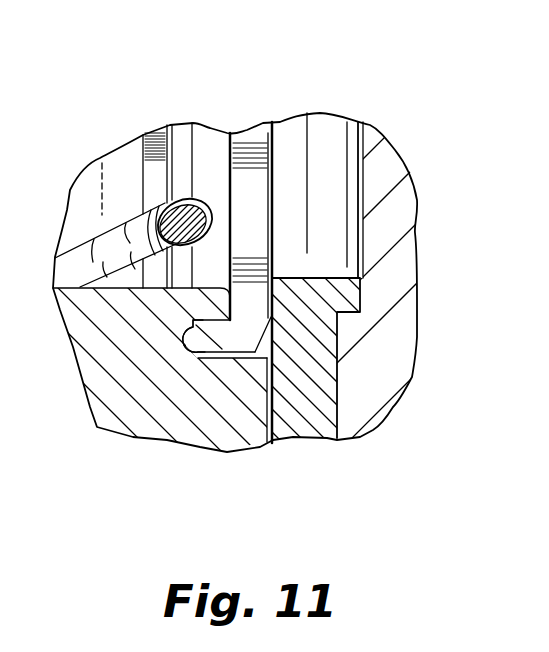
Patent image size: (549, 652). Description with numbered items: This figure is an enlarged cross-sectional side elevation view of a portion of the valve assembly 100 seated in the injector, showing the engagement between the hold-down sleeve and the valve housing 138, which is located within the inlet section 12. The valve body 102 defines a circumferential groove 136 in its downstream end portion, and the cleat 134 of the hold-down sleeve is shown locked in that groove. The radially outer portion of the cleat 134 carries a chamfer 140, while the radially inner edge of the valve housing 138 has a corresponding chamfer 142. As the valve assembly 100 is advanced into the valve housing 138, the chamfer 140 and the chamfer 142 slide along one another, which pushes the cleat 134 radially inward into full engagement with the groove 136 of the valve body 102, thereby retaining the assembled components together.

The valve assembly 100 is at (110, 107).
The inlet section 12 is at (397, 213).
The valve body 102 is at (108, 378).
The cleat 134 is at (242, 333).
The circumferential groove 136 is at (193, 323).
The valve housing 138 is at (308, 380).
The chamfer 140 is at (257, 340).
The chamfer 142 is at (277, 275).